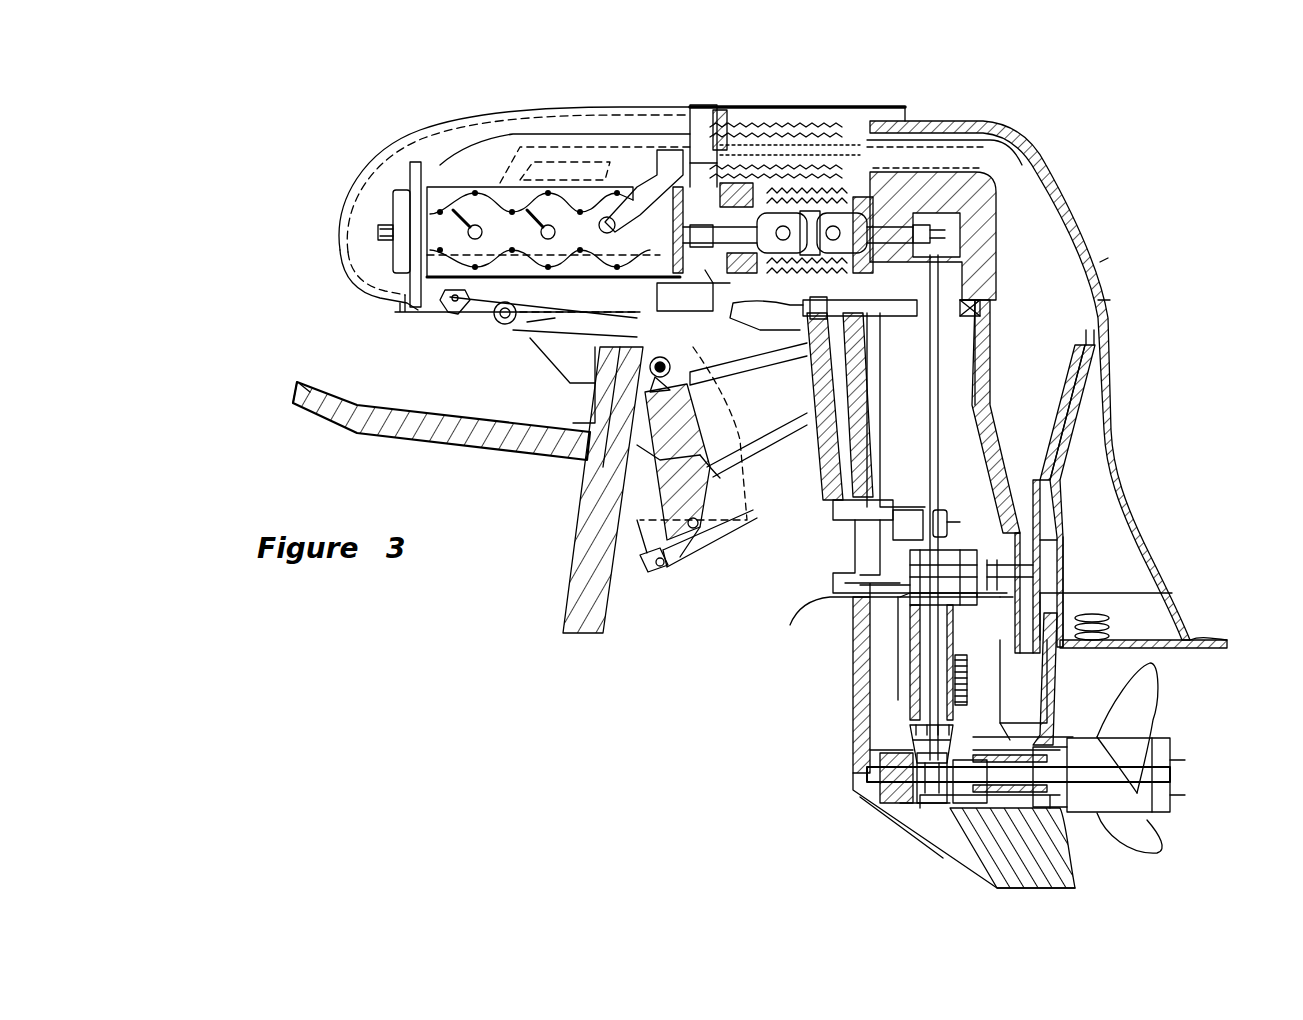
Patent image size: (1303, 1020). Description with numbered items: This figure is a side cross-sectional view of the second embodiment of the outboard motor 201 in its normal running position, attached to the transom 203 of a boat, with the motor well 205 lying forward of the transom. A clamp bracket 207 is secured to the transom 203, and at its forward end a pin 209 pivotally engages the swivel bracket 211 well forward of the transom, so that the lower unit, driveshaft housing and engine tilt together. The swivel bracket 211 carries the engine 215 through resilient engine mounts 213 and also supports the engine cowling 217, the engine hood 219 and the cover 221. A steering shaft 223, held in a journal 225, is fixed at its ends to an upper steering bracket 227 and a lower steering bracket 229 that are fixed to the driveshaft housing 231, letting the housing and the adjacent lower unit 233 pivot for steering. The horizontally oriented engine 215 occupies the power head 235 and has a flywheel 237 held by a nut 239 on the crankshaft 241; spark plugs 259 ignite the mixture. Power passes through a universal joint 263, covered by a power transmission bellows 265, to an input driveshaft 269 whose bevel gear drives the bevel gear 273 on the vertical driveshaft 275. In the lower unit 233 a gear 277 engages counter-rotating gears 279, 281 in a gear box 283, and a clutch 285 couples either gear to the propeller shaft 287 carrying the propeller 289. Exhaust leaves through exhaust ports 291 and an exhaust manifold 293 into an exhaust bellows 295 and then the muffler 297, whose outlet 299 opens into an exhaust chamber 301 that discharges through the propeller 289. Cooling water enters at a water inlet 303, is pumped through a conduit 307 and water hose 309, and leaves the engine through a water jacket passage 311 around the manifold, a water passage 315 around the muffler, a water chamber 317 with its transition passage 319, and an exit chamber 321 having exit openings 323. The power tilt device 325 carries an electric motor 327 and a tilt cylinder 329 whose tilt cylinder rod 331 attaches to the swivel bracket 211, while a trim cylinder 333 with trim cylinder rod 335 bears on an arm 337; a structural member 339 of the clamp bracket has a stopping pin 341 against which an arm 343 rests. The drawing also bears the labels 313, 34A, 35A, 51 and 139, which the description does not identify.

The outboard motor 201 is at (260, 163).
The transom 203 is at (583, 423).
The motor well 205 is at (305, 383).
The clamp bracket 207 is at (455, 305).
The pin 209 is at (497, 322).
The swivel bracket 211 is at (533, 336).
The resilient engine mounts 213 is at (400, 311).
The engine 215 is at (443, 188).
The engine cowling 217 is at (342, 276).
The engine hood 219 is at (482, 117).
The cover 221 is at (888, 108).
The steering shaft 223 is at (840, 380).
The journal 225 is at (823, 500).
The upper steering bracket 227 is at (832, 375).
The lower steering bracket 229 is at (855, 516).
The driveshaft housing 231 is at (1117, 433).
The lower unit 233 is at (1182, 630).
The power head 235 is at (555, 124).
The flywheel 237 is at (392, 212).
The nut 239 is at (390, 205).
The crankshaft 241 is at (378, 232).
The spark plugs 259 is at (489, 228).
The universal joint 263 is at (797, 193).
The power transmission bellows 265 is at (782, 193).
The input driveshaft 269 is at (873, 183).
The bevel gear 273 is at (992, 232).
The driveshaft 275 is at (983, 453).
The gear 277 is at (905, 730).
The counter-rotating gear 279 is at (865, 785).
The counter-rotating gear 281 is at (947, 828).
The gear box 283 is at (900, 810).
The clutch 285 is at (930, 828).
The propeller shaft 287 is at (1023, 775).
The propeller 289 is at (1137, 720).
The exhaust ports 291 is at (562, 228).
The exhaust manifold 293 is at (648, 153).
The exhaust bellows 295 is at (727, 117).
The exhaust muffler 297 is at (1107, 300).
The outlet 299 is at (1032, 660).
The exhaust chamber 301 is at (1010, 677).
The water inlet 303 is at (970, 712).
The conduit 307 is at (985, 410).
The water hose 309 is at (748, 316).
The water jacket passage 311 is at (680, 148).
The threaded rod 313 is at (827, 122).
The water passage 315 is at (1100, 258).
The water chamber 317 is at (1008, 475).
The transition passage 319 is at (1097, 372).
The exit chamber 321 is at (1078, 551).
The exit openings 323 is at (1090, 613).
The power tilt device 325 is at (637, 467).
The electric motor 327 is at (712, 402).
The tilt cylinder 329 is at (640, 480).
The tilt cylinder rod 331 is at (668, 361).
The trim cylinder 333 is at (650, 557).
The trim cylinder rod 335 is at (717, 450).
The arm 337 is at (764, 414).
The structural member 339 is at (680, 560).
The stopping pin 341 is at (660, 565).
The arm 343 is at (800, 495).
The coupling 34A is at (982, 306).
The driveshaft 35A is at (920, 520).
The anti-ventilation plate 51 is at (845, 583).
The housing wall 139 is at (1077, 470).